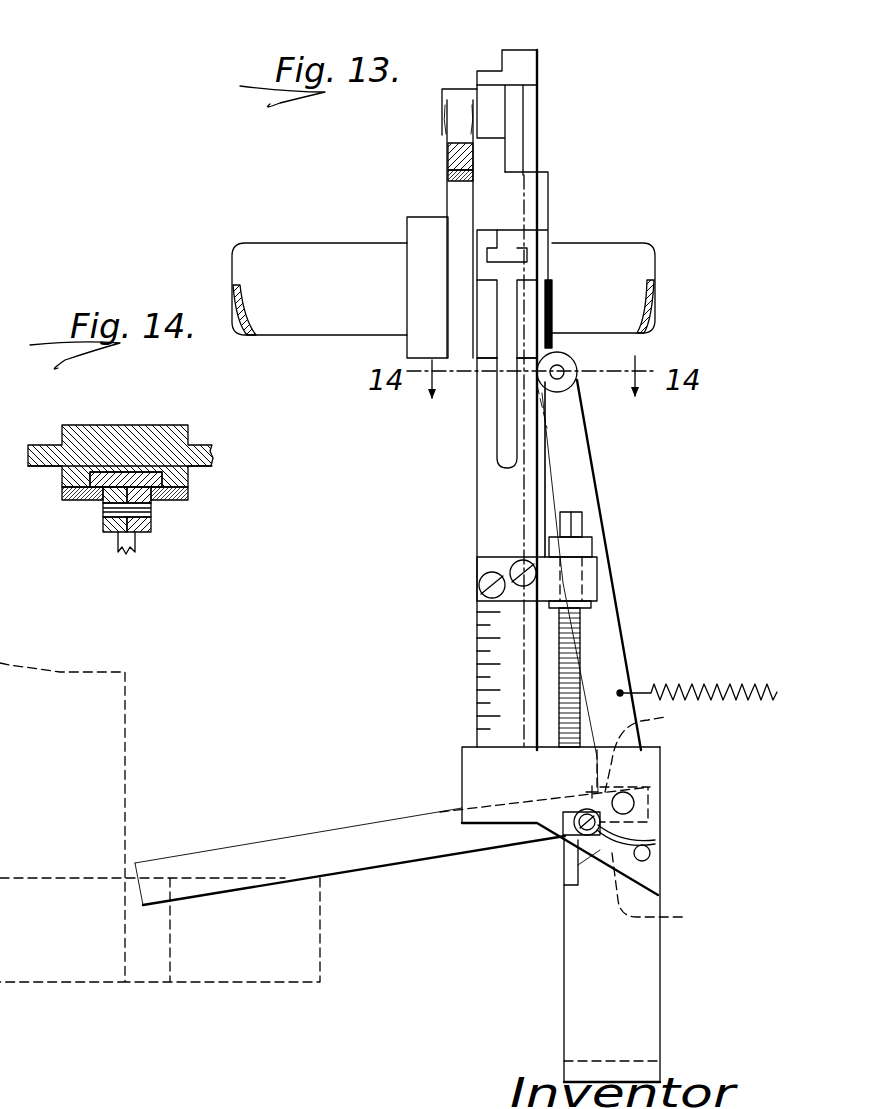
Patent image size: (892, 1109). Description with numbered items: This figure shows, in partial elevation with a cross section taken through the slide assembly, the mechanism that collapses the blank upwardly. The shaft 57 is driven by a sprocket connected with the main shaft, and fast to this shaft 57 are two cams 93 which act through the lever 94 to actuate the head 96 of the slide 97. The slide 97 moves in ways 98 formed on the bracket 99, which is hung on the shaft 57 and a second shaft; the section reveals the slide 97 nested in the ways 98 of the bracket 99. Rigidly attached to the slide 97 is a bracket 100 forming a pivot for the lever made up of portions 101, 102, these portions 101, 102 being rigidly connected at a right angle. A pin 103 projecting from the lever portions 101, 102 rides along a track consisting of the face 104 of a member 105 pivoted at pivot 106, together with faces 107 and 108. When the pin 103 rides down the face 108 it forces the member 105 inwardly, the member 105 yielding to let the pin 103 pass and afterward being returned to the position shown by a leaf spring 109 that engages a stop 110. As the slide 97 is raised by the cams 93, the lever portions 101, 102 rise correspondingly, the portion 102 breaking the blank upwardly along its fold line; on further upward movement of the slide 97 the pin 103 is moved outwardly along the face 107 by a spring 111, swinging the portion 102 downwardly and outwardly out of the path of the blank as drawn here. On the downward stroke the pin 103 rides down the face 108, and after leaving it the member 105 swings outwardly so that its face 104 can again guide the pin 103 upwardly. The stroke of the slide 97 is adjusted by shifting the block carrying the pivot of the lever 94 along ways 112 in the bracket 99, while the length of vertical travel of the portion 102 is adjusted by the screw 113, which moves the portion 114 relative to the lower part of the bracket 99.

In FIG. 13, the shaft 57 is at (303, 258).
In FIG. 13, the cam 93 is at (458, 197).
In FIG. 13, the lever 94 is at (447, 158).
In FIG. 13, the head 96 is at (515, 62).
In FIG. 13, the slide 97 is at (540, 118).
In FIG. 14, the slide 97 is at (175, 500).
In FIG. 14, the ways 98 is at (190, 478).
In FIG. 13, the bracket 99 is at (486, 477).
In FIG. 14, the bracket 99 is at (92, 438).
In FIG. 13, the bracket 100 is at (553, 313).
In FIG. 14, the bracket 100 is at (103, 526).
In FIG. 13, the lever portion 101 is at (588, 487).
In FIG. 14, the lever portion 101 is at (128, 550).
In FIG. 13, the lever portion 102 is at (348, 842).
In FIG. 13, the pin 103 is at (635, 803).
In FIG. 13, the face 104 is at (560, 862).
In FIG. 13, the member 105 is at (578, 865).
In FIG. 13, the pivot 106 is at (598, 812).
In FIG. 13, the face 107 is at (575, 758).
In FIG. 13, the face 108 is at (674, 896).
In FIG. 13, the leaf spring 109 is at (646, 845).
In FIG. 13, the stop 110 is at (650, 857).
In FIG. 13, the spring 111 is at (706, 687).
In FIG. 13, the ways 112 is at (510, 260).
In FIG. 13, the screw 113 is at (575, 638).
In FIG. 13, the portion 114 is at (644, 982).